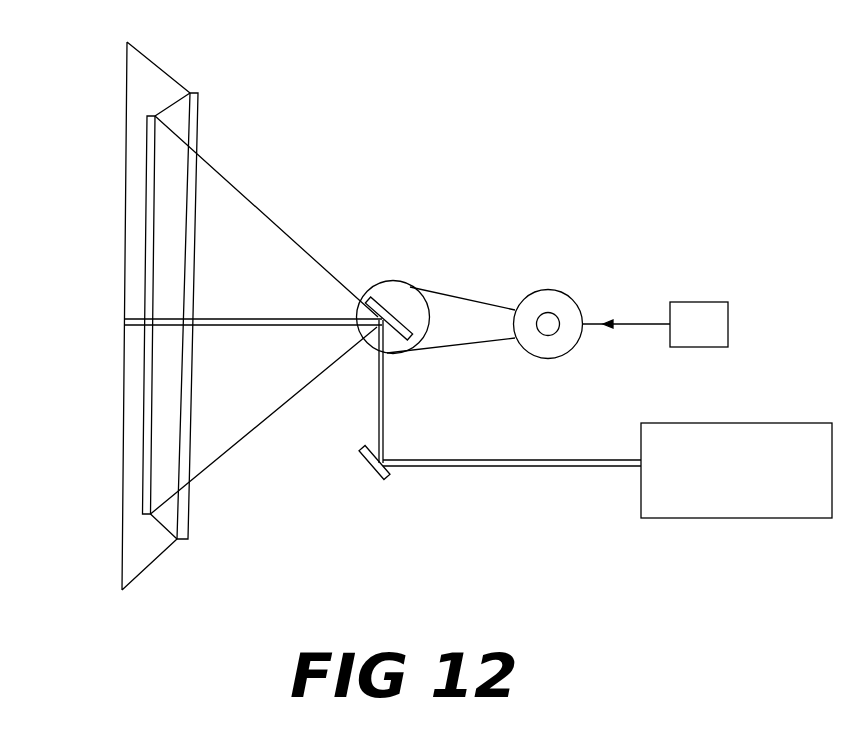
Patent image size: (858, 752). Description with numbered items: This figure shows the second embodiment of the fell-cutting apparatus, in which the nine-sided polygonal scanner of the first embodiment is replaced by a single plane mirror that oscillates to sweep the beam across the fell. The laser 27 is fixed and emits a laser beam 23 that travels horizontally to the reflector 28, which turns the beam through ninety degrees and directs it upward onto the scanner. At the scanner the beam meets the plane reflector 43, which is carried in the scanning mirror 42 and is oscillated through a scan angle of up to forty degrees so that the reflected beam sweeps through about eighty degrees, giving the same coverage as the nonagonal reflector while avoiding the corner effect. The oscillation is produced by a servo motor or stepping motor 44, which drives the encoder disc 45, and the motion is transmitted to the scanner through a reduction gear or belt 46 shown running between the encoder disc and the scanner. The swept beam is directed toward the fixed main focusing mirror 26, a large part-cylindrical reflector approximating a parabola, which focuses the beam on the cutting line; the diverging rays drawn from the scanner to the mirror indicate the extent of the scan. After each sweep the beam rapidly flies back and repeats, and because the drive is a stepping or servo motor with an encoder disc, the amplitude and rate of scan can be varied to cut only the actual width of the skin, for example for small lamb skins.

The main focusing mirror 26 is at (142, 463).
The plane reflector 43 is at (375, 302).
The scanning mirror 42 is at (415, 302).
The reduction gear or belt 46 is at (483, 300).
The encoder disc 45 is at (578, 303).
The servo motor or stepping motor 44 is at (713, 338).
The laser 27 is at (726, 480).
The reflector 28 is at (378, 478).
The laser beam 23 is at (551, 467).